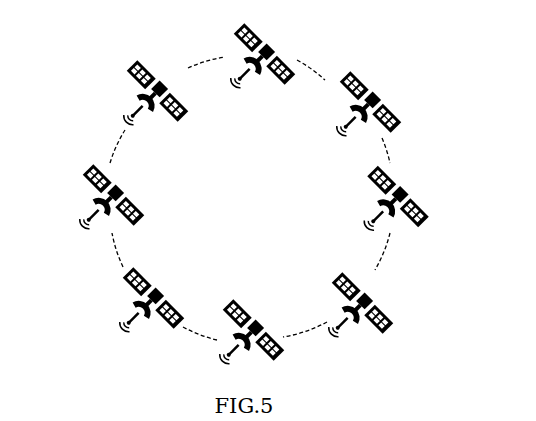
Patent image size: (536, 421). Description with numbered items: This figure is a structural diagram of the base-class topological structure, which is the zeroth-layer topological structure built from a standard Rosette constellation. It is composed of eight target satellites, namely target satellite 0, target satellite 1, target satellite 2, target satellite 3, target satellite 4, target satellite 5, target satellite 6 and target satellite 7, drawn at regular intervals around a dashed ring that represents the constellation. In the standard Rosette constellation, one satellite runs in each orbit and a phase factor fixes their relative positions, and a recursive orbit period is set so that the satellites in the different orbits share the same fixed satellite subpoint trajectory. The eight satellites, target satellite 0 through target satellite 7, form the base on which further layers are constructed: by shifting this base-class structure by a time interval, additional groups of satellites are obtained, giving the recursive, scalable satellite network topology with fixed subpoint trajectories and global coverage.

The target satellite 0 is at (252, 66).
The target satellite 1 is at (358, 114).
The target satellite 2 is at (385, 209).
The target satellite 3 is at (351, 315).
The target satellite 4 is at (246, 342).
The target satellite 5 is at (141, 310).
The target satellite 6 is at (101, 207).
The target satellite 7 is at (144, 103).